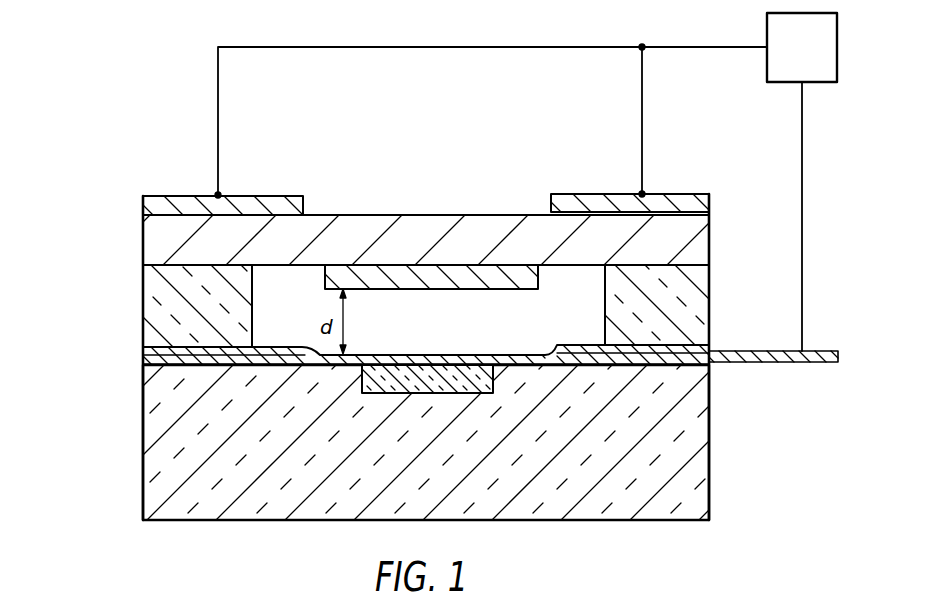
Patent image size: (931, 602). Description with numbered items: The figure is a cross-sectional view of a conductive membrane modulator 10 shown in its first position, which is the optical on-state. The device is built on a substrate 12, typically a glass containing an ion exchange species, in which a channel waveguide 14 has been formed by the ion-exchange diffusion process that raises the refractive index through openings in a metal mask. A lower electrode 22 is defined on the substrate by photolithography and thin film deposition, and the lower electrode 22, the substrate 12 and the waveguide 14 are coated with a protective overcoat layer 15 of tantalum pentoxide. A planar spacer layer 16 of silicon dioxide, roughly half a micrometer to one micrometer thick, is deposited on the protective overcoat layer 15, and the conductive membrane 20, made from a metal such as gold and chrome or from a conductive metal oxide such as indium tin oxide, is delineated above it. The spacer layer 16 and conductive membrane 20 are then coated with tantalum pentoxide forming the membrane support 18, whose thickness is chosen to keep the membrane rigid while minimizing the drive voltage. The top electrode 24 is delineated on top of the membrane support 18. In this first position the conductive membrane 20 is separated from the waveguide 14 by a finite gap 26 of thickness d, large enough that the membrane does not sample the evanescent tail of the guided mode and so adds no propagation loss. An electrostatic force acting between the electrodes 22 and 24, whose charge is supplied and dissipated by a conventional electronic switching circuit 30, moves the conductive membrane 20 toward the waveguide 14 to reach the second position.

The conductive membrane modulator 10 is at (118, 523).
The substrate 12 is at (160, 445).
The waveguide 14 is at (398, 385).
The protective overcoat layer 15 is at (150, 352).
The spacer layer 16 is at (150, 298).
The membrane support 18 is at (388, 227).
The conductive membrane 20 is at (475, 275).
The lower electrode 22 is at (765, 364).
The top electrode 24 is at (676, 197).
The gap 26 is at (428, 317).
The electronic switching circuit 30 is at (526, 182).